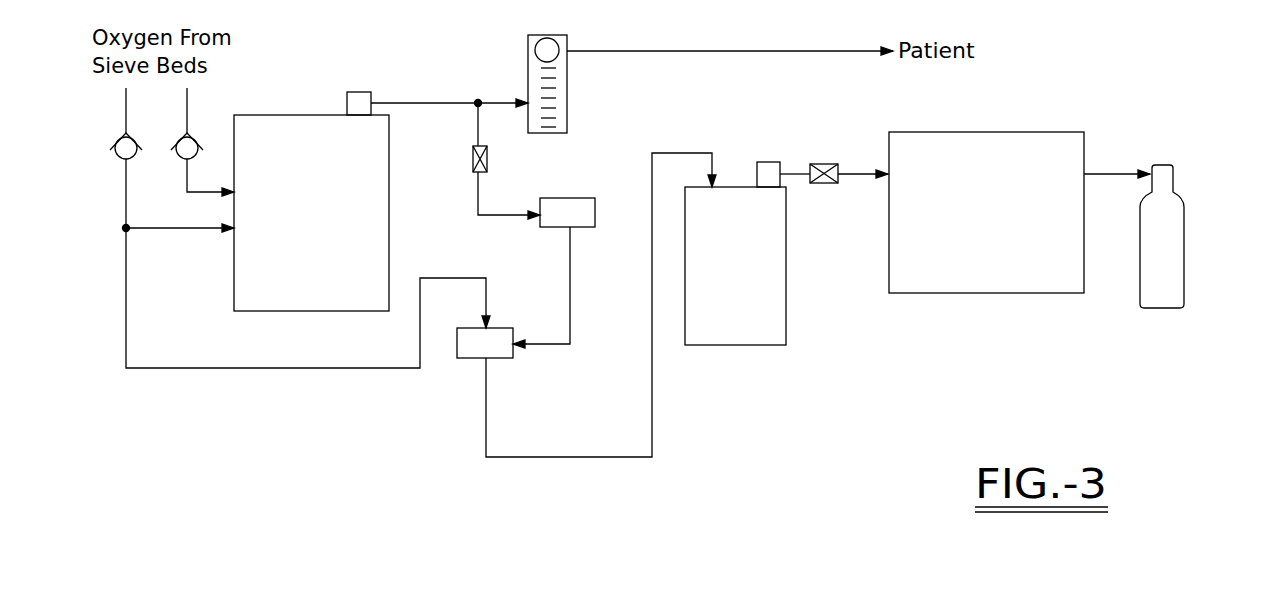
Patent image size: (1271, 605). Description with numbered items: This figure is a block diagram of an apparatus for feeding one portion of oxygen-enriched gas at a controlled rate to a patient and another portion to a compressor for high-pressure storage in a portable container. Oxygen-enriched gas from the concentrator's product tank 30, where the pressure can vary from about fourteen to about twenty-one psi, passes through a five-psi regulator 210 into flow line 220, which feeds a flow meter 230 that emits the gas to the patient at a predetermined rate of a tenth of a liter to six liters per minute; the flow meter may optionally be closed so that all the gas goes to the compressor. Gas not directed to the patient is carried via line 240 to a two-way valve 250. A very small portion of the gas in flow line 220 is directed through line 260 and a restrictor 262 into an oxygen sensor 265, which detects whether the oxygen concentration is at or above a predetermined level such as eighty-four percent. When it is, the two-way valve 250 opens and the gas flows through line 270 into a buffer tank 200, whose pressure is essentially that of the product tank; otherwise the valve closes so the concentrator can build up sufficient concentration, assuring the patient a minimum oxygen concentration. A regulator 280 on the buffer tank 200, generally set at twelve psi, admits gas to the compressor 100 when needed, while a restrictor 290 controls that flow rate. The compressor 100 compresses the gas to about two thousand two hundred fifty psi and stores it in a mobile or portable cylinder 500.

The product tank 30 is at (320, 312).
The compressor 100 is at (990, 293).
The buffer tank 200 is at (786, 322).
The 5-psi regulator 210 is at (357, 92).
The flow line 220 is at (435, 103).
The flow meter 230 is at (567, 90).
The line 240 is at (298, 368).
The two-way valve 250 is at (505, 358).
The line 260 is at (478, 128).
The restrictor 262 is at (487, 160).
The oxygen sensor 265 is at (576, 198).
The line 270 is at (652, 408).
The regulator 280 is at (766, 162).
The restrictor 290 is at (828, 164).
The cylinder 500 is at (1184, 245).